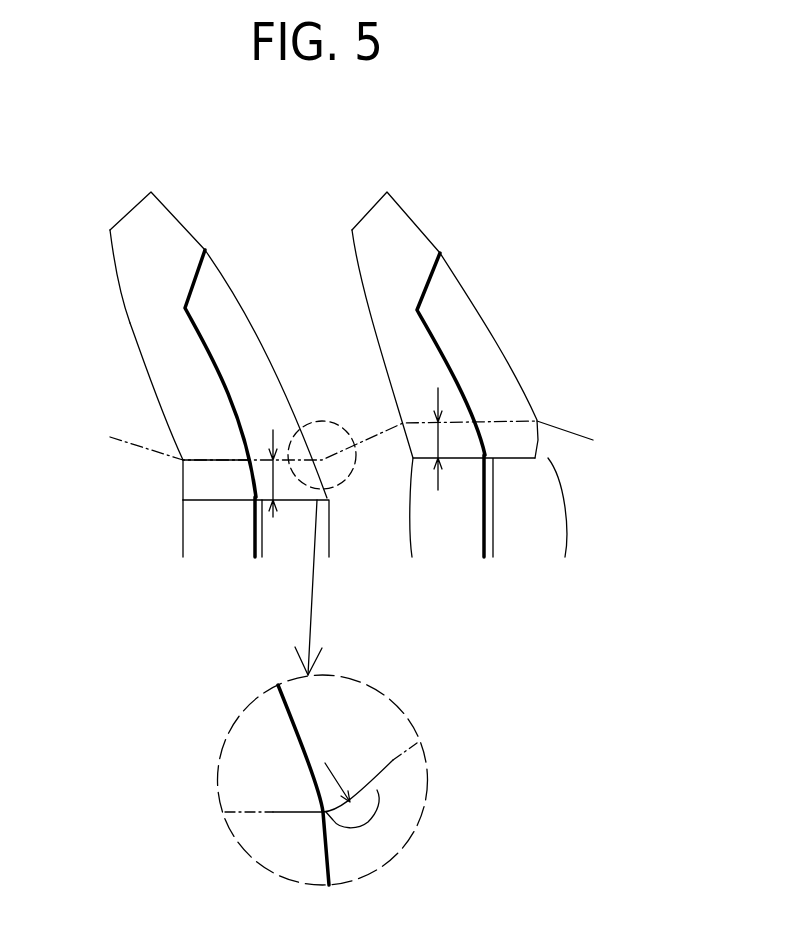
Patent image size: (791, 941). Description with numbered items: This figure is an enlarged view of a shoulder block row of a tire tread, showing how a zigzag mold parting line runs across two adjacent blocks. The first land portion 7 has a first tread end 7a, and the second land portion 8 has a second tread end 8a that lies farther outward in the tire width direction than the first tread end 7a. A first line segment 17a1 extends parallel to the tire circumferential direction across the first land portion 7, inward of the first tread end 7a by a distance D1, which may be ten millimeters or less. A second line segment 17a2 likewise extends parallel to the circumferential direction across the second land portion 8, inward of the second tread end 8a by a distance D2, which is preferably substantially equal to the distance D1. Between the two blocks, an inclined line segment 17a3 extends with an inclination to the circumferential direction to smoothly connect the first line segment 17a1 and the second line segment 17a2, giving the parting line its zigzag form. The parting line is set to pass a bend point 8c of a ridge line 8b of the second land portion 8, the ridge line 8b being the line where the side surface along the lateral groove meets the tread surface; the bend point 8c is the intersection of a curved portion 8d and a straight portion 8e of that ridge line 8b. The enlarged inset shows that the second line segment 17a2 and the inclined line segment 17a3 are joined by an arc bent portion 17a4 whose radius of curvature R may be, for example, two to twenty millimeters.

The first land portion 7 is at (418, 243).
The first tread end 7a is at (510, 463).
The second land portion 8 is at (128, 238).
The second tread end 8a is at (215, 503).
The ridge line 8b is at (130, 323).
The bend point 8c is at (180, 463).
The curved portion 8d is at (160, 400).
The straight portion 8e is at (183, 487).
The first line segment 17a1 is at (490, 418).
The second line segment 17a2 is at (215, 457).
The inclined line segment 17a3 is at (140, 447).
The arc bent portion 17a4 is at (363, 820).
The distance D1 is at (444, 437).
The distance D2 is at (287, 487).
The radius of curvature R is at (337, 768).